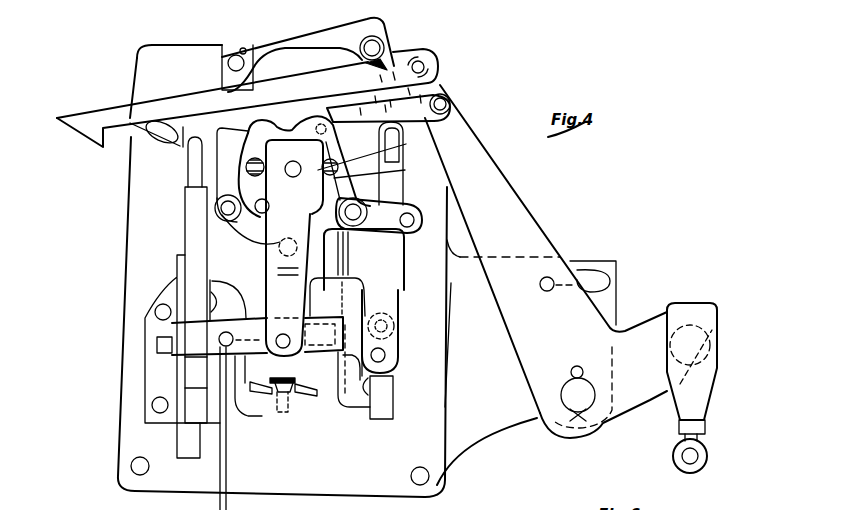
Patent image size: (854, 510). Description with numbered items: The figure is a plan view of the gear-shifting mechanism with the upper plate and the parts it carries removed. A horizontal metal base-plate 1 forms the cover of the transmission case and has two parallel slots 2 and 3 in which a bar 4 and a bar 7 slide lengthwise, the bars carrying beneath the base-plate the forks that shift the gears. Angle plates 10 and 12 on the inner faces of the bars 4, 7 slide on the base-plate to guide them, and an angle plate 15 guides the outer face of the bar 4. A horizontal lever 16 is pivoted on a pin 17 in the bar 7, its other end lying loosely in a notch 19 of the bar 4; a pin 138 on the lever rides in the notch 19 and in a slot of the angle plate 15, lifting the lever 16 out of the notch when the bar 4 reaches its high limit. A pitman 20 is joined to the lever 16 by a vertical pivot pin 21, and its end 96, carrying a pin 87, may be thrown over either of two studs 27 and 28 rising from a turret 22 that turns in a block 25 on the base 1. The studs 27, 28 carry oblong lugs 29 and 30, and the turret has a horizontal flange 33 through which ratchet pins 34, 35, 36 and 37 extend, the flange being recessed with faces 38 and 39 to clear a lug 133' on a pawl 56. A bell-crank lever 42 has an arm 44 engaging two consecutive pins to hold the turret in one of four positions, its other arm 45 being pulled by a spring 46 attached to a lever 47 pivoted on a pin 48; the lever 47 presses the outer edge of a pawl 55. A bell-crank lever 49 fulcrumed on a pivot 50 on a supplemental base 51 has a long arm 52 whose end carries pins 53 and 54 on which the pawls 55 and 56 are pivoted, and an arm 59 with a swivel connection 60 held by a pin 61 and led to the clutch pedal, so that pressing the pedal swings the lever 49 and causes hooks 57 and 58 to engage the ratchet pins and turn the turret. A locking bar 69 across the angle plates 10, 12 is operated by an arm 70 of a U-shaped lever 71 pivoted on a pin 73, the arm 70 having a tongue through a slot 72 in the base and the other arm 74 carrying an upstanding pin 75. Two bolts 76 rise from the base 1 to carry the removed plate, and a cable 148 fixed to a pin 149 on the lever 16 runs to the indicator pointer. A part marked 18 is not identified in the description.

The base-plate 1 is at (284, 271).
The slot 2 is at (191, 172).
The slot 3 is at (391, 163).
The bar 4 is at (192, 322).
The bar 7 is at (406, 188).
The angle plate 10 is at (244, 288).
The angle plate 12 is at (360, 410).
The angle plate 15 is at (182, 339).
The horizontal lever 16 is at (333, 367).
The pin 17 is at (399, 331).
The hub 18 is at (398, 318).
The notch 19 is at (201, 320).
The pitman 20 is at (288, 278).
The vertical pivot pin 21 is at (250, 385).
The turret 22 is at (388, 108).
The horizontal block 25 is at (294, 63).
The stud 27 is at (250, 157).
The stud 28 is at (340, 133).
The oblong lug 29 is at (248, 171).
The oblong lug 30 is at (372, 151).
The horizontal flange 33 is at (247, 166).
The pin 34 is at (262, 118).
The pin 35 is at (327, 108).
The pin 36 is at (330, 253).
The pin 37 is at (260, 213).
The face 38 is at (288, 163).
The face 39 is at (308, 120).
The horizontal bell-crank lever 42 is at (364, 259).
The arm 44 is at (381, 169).
The arm 45 is at (379, 215).
The spring 46 is at (386, 56).
The lever 47 is at (298, 37).
The pin 48 is at (236, 55).
The bell-crank lever 49 is at (565, 437).
The pivot 50 is at (562, 390).
The supplemental base 51 is at (487, 442).
The long arm 52 is at (546, 261).
The pin 53 is at (430, 61).
The pin 54 is at (451, 103).
The pawl 55 is at (380, 83).
The pawl 56 is at (449, 131).
The hook 57 is at (247, 107).
The hook 58 is at (182, 147).
The arm 59 is at (597, 387).
The swivel connection 60 is at (706, 390).
The pin 61 is at (720, 347).
The horizontal locking bar 69 is at (340, 403).
The arm 70 is at (282, 373).
The U-shaped lever 71 is at (337, 296).
The slot 72 is at (283, 396).
The pin 73 is at (278, 249).
The arm 74 is at (380, 320).
The upstanding pin 75 is at (390, 356).
The vertical bolts 76 is at (228, 221).
The pin 87 is at (291, 179).
The end of pitman 96 is at (294, 176).
The lug 133' is at (166, 108).
The pin 138 is at (218, 340).
The cable 148 is at (227, 479).
The pin 149 is at (254, 414).